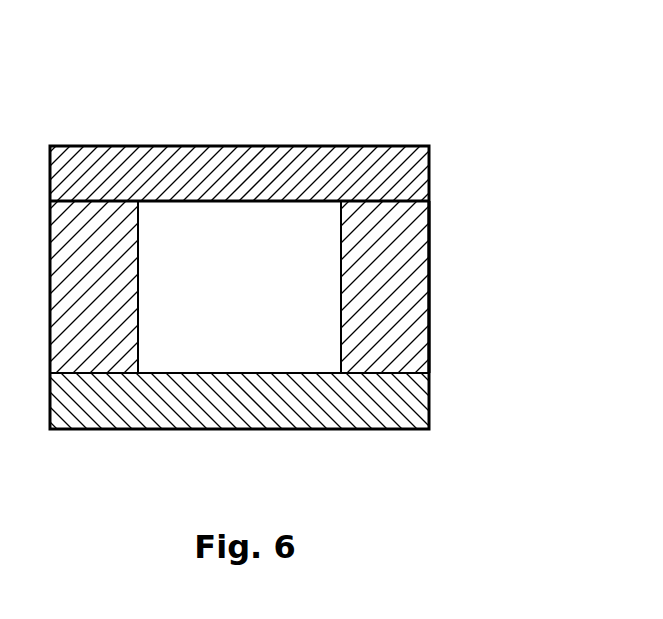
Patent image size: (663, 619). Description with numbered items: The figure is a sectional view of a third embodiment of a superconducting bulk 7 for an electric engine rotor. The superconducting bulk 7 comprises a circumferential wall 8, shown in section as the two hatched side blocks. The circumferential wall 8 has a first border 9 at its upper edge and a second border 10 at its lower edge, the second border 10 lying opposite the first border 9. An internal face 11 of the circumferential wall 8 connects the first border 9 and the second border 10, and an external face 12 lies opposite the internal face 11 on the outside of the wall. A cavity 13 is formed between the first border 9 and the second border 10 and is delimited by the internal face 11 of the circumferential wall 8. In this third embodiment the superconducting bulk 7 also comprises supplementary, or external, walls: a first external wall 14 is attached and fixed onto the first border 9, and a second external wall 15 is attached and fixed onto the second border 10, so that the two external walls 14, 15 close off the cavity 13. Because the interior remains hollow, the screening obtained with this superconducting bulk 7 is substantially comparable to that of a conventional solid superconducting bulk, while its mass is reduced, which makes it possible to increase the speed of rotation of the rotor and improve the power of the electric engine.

The superconducting bulk 7 is at (426, 118).
The circumferential wall 8 is at (400, 330).
The first border 9 is at (100, 194).
The second border 10 is at (372, 378).
The internal face 11 is at (338, 348).
The external face 12 is at (434, 282).
The cavity 13 is at (197, 287).
The first external wall 14 is at (257, 160).
The second external wall 15 is at (126, 400).